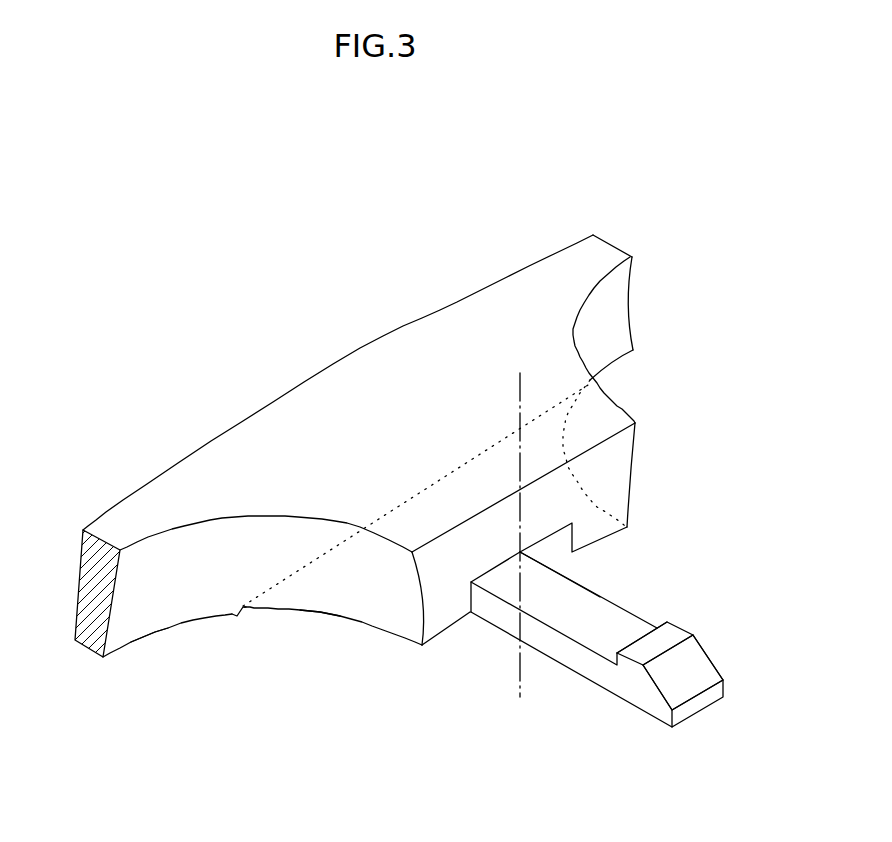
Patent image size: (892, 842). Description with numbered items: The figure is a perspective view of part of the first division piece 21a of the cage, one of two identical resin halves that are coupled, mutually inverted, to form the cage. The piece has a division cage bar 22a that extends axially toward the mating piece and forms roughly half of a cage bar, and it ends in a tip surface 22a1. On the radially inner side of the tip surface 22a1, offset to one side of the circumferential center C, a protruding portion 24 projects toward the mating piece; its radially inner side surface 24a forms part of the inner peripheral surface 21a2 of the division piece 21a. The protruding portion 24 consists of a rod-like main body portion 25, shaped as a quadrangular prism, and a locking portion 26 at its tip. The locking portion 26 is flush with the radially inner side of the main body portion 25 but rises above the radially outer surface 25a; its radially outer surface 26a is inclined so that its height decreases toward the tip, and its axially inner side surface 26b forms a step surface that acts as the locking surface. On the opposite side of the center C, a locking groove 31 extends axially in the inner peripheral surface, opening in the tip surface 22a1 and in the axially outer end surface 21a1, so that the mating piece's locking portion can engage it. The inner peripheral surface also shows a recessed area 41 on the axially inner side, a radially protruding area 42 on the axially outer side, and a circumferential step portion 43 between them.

The first division piece 21a is at (496, 228).
The axially outer end surface 21a1 is at (385, 334).
The inner peripheral surface 21a2 is at (383, 630).
The division cage bar 22a is at (590, 420).
The tip surface 22a1 is at (605, 467).
The locking groove 31 is at (542, 538).
The recessed area 41 is at (323, 613).
The protruding area 42 is at (150, 637).
The step portion 43 is at (240, 613).
The center C is at (520, 405).
The protruding portion 24 is at (609, 687).
The radially inner side surface 24a is at (573, 673).
The main body portion 25 is at (502, 620).
The radially outer surface 25a is at (597, 612).
The locking portion 26 is at (695, 680).
The radially outer surface 26a is at (690, 668).
The axially inner side surface 26b is at (640, 625).